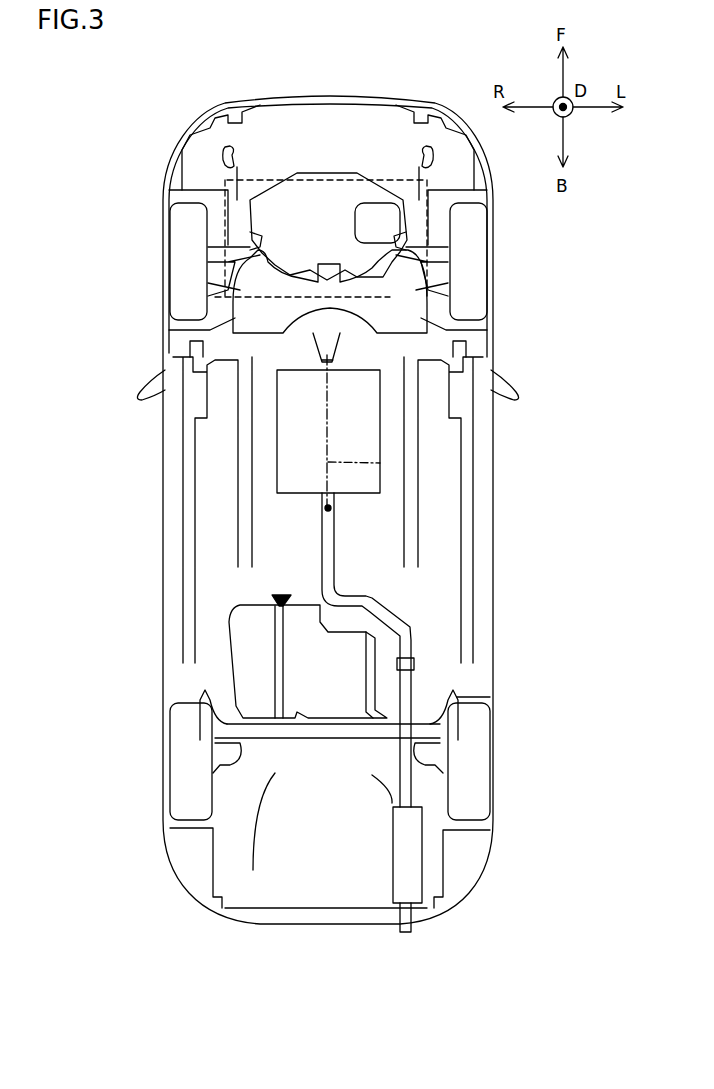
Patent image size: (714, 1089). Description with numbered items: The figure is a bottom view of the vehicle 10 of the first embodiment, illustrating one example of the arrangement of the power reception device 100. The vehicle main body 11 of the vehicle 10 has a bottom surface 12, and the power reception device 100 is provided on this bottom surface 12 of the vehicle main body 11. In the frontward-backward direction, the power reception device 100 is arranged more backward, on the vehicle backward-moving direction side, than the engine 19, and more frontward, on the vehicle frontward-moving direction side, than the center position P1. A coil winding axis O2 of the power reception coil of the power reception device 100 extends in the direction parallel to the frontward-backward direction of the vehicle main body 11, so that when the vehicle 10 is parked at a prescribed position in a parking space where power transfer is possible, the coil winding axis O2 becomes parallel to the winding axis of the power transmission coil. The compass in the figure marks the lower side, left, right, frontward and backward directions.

The vehicle 10 is at (177, 88).
The vehicle main body 11 is at (325, 96).
The engine 19 is at (265, 180).
The power reception device 100 is at (397, 401).
The coil winding axis O2 is at (380, 463).
The center position P1 is at (325, 508).
The bottom surface 12 is at (291, 545).